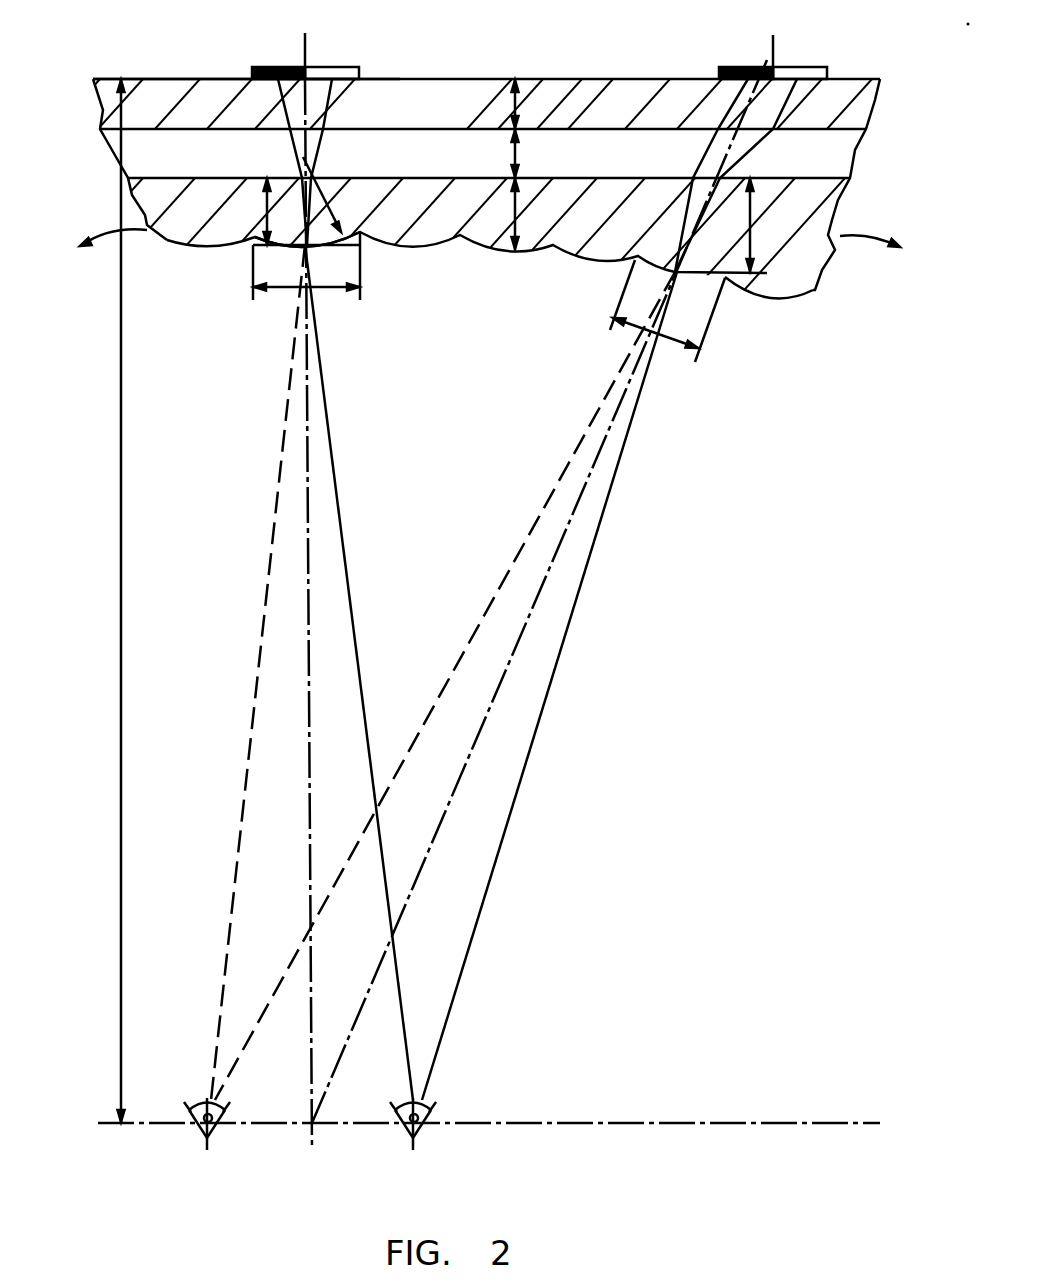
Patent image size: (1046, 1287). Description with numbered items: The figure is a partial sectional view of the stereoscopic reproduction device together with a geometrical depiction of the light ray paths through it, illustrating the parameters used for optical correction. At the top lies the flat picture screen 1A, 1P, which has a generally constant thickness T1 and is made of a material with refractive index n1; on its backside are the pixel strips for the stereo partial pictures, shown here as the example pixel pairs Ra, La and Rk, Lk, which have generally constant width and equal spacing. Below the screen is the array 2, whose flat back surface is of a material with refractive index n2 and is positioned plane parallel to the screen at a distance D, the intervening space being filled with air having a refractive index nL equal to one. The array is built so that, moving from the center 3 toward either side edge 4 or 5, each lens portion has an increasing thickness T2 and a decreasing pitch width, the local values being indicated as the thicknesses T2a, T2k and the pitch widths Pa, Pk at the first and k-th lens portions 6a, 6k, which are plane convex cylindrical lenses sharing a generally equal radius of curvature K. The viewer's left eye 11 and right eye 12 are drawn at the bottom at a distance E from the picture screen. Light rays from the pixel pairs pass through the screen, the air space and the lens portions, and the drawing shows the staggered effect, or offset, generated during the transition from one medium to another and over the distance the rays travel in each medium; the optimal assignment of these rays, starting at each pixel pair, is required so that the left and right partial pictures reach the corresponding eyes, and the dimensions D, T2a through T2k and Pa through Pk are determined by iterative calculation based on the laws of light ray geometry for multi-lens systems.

The flat picture screen 1A is at (158, 97).
The flat picture screen 1P is at (463, 104).
The array 2 is at (830, 250).
The center 3 is at (303, 247).
The side edge 4 is at (100, 247).
The side edge 5 is at (880, 249).
The pixel strip for right stereo partial picture Ra is at (278, 67).
The pixel strip for left stereo partial picture La is at (332, 67).
The pixel strip for right stereo partial picture Rk is at (750, 67).
The pixel strip for left stereo partial picture Lk is at (800, 67).
The refractive index of picture screen material n1 is at (346, 129).
The refractive index of air space nL is at (366, 150).
The refractive index of array material n2 is at (334, 230).
The thickness of picture screen T1 is at (488, 129).
The distance between picture screen and array D is at (518, 138).
The lens portion thickness T2 is at (518, 200).
The lens portion thickness at position a T2a is at (257, 243).
The lens portion thickness at position k T2k is at (812, 292).
The lens portion 6a is at (303, 247).
The lens portion 6k is at (767, 295).
The radius of curvature K is at (305, 245).
The pitch width Pa is at (305, 248).
The pitch width Pk is at (698, 348).
The distance between picture screen and viewer's eyes E is at (120, 558).
The left eye 11 is at (210, 1131).
The right eye 12 is at (415, 1133).